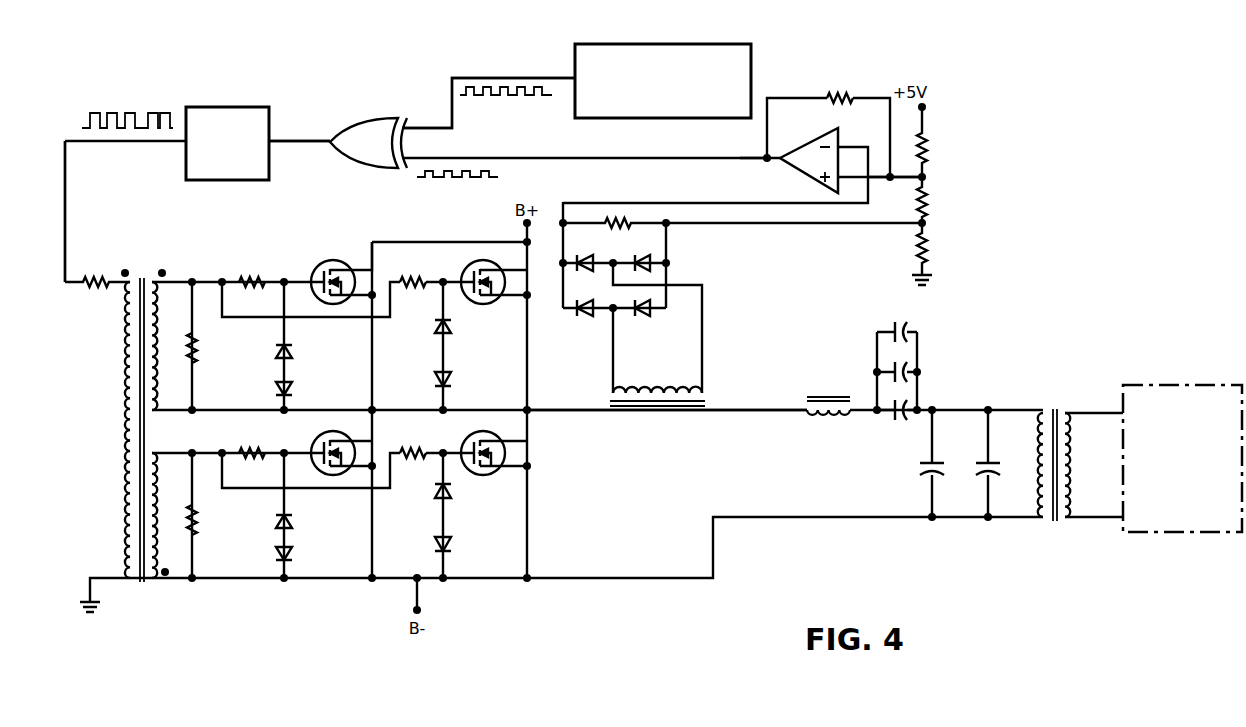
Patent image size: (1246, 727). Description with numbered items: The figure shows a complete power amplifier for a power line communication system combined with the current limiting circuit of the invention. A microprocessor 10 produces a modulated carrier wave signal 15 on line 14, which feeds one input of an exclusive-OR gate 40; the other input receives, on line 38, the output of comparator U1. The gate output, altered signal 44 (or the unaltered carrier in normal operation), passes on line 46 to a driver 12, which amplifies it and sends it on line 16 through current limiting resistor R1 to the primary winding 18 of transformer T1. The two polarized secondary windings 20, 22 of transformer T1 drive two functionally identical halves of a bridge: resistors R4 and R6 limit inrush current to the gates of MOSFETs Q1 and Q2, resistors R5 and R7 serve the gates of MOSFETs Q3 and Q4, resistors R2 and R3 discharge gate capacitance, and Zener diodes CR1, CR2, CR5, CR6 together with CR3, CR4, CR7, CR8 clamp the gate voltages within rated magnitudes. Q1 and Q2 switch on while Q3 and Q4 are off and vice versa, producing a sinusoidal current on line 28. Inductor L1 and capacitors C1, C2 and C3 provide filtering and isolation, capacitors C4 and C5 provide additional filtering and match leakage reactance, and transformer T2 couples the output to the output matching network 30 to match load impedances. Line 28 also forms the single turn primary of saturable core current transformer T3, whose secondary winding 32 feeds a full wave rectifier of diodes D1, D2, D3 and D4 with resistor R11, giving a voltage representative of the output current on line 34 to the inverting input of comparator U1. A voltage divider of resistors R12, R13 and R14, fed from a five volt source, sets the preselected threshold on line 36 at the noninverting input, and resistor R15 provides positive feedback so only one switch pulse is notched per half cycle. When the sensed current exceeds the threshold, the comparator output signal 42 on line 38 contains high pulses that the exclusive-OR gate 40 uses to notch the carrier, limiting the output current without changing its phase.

The microprocessor 10 is at (751, 52).
The driver 12 is at (227, 180).
The line 14 is at (487, 80).
The modulated carrier wave signal 15 is at (501, 96).
The line 16 is at (65, 184).
The primary winding 18 is at (126, 396).
The secondary winding 20 is at (155, 334).
The secondary winding 22 is at (155, 493).
The line 28 is at (554, 413).
The output matching network 30 is at (1150, 532).
The secondary winding 32 is at (649, 386).
The line 34 is at (786, 224).
The line 36 is at (876, 180).
The line 38 is at (766, 164).
The exclusive-OR gate 40 is at (346, 169).
The output signal 42 is at (456, 178).
The altered signal 44 is at (130, 113).
The line 46 is at (284, 142).
The resistor R1 is at (88, 276).
The resistor R2 is at (196, 351).
The resistor R3 is at (194, 508).
The resistor R4 is at (256, 272).
The resistor R5 is at (254, 446).
The resistor R6 is at (402, 276).
The resistor R7 is at (432, 448).
The resistor R11 is at (608, 222).
The resistor R12 is at (927, 158).
The resistor R13 is at (928, 203).
The resistor R14 is at (928, 253).
The resistor R15 is at (835, 98).
The transformer T1 is at (134, 412).
The transformer T2 is at (1054, 404).
The saturable core current transformer T3 is at (674, 334).
The inductor L1 is at (814, 394).
The capacitor C1 is at (906, 324).
The capacitor C2 is at (918, 367).
The capacitor C3 is at (918, 405).
The capacitor C4 is at (926, 472).
The capacitor C5 is at (986, 472).
The Zener diode CR1 is at (293, 351).
The Zener diode CR2 is at (293, 389).
The Zener diode CR3 is at (292, 518).
The Zener diode CR4 is at (292, 554).
The Zener diode CR5 is at (452, 326).
The Zener diode CR6 is at (452, 382).
The Zener diode CR7 is at (452, 490).
The Zener diode CR8 is at (452, 546).
The diode D1 is at (588, 320).
The diode D2 is at (590, 255).
The diode D3 is at (647, 317).
The diode D4 is at (646, 255).
The MOSFET Q1 is at (336, 258).
The MOSFET Q2 is at (474, 268).
The MOSFET Q3 is at (320, 438).
The MOSFET Q4 is at (474, 439).
The comparator U1 is at (816, 137).